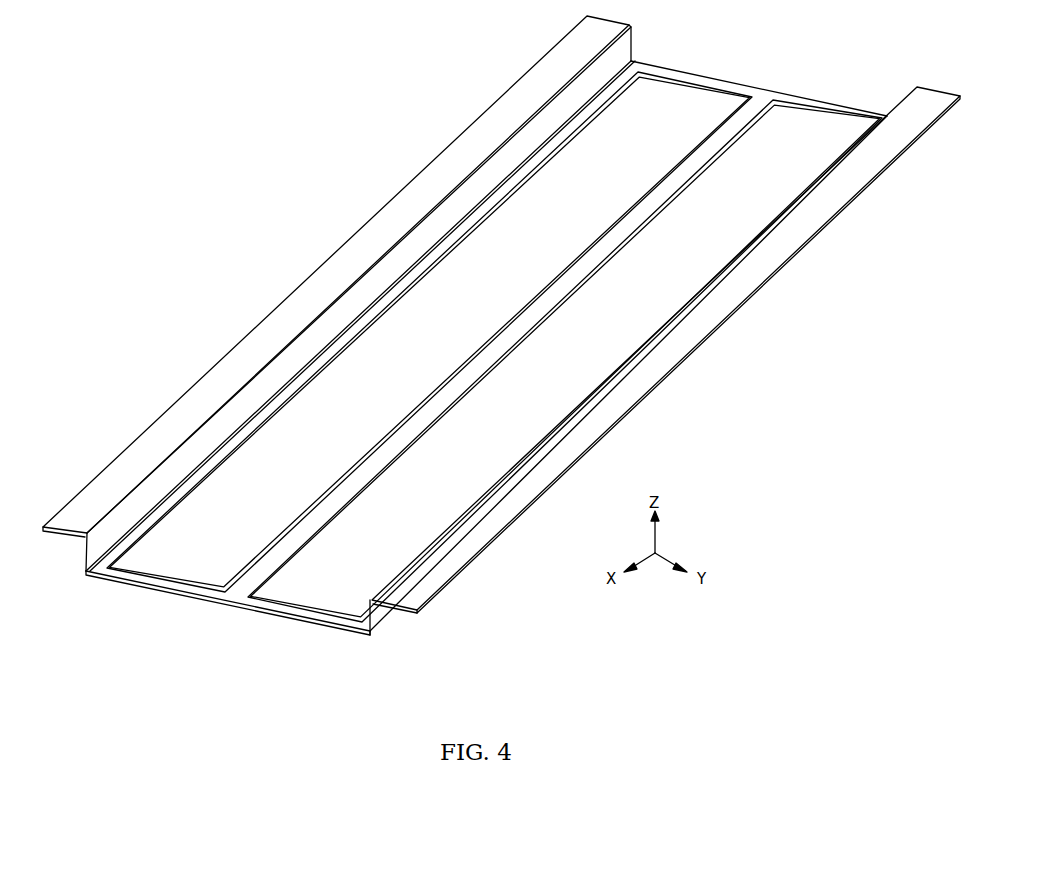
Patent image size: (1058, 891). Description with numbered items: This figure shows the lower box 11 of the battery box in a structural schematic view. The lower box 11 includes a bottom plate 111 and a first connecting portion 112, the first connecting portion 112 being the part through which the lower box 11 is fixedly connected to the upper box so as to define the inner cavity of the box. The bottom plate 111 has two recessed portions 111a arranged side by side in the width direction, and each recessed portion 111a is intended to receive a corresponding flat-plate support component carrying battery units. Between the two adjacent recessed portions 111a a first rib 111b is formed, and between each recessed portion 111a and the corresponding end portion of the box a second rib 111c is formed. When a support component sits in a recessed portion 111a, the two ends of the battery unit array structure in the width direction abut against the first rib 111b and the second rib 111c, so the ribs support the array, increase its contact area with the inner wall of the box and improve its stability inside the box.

The lower box 11 is at (501, 347).
The bottom plate 111 is at (501, 347).
The recessed portion 111a is at (675, 83).
The first rib 111b is at (486, 340).
The second rib 111c is at (104, 566).
The first connecting portion 112 is at (234, 348).